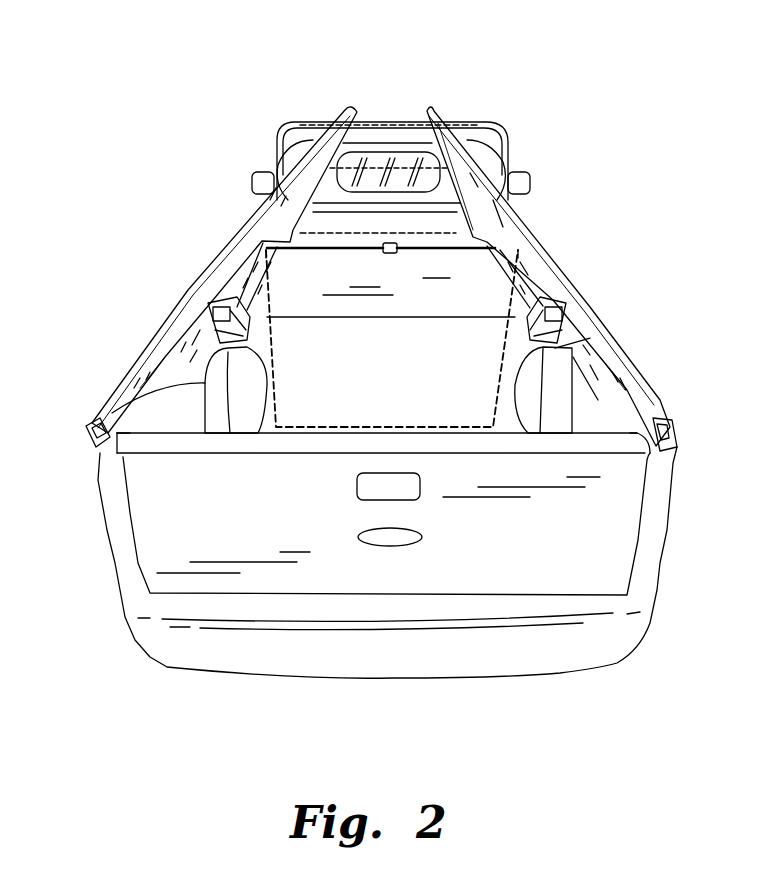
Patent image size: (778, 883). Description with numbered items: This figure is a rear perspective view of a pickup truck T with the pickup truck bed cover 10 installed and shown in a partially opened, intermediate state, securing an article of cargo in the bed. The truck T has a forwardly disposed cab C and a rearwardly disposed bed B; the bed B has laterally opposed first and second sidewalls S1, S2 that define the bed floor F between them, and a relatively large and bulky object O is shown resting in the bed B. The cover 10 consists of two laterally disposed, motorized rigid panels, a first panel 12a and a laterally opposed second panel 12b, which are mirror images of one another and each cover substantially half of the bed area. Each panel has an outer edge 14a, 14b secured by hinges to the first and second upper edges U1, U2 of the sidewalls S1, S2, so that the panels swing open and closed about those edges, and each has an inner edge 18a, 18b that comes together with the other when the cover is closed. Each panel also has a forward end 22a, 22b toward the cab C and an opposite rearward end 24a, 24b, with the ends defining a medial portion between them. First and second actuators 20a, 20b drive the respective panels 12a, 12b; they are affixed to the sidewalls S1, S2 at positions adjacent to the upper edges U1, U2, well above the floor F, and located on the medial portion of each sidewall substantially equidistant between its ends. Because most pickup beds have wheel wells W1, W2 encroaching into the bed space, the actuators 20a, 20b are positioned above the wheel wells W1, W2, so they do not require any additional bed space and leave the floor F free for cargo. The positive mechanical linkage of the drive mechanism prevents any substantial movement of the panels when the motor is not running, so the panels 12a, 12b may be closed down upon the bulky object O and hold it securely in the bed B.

The pickup truck bed cover 10 is at (462, 109).
The first panel 12a is at (250, 227).
The second panel 12b is at (521, 228).
The outer edge of first panel 14a is at (138, 360).
The outer edge of second panel 14b is at (581, 297).
The inner edge of first panel 18a is at (314, 232).
The inner edge of second panel 18b is at (466, 226).
The first actuator 20a is at (207, 302).
The second actuator 20b is at (553, 300).
The forward end of first panel 22a is at (316, 133).
The forward end of second panel 22b is at (493, 173).
The rearward end of first panel 24a is at (88, 438).
The rearward end of second panel 24b is at (637, 453).
The cab C is at (285, 128).
The bed B is at (203, 440).
The bed floor F is at (385, 342).
The object O is at (310, 432).
The first sidewall S1 is at (166, 421).
The second sidewall S2 is at (628, 431).
The wheel well W1 is at (155, 370).
The wheel well W2 is at (560, 360).
The first upper edge U1 is at (100, 417).
The second upper edge U2 is at (663, 413).
The pickup truck T is at (143, 650).